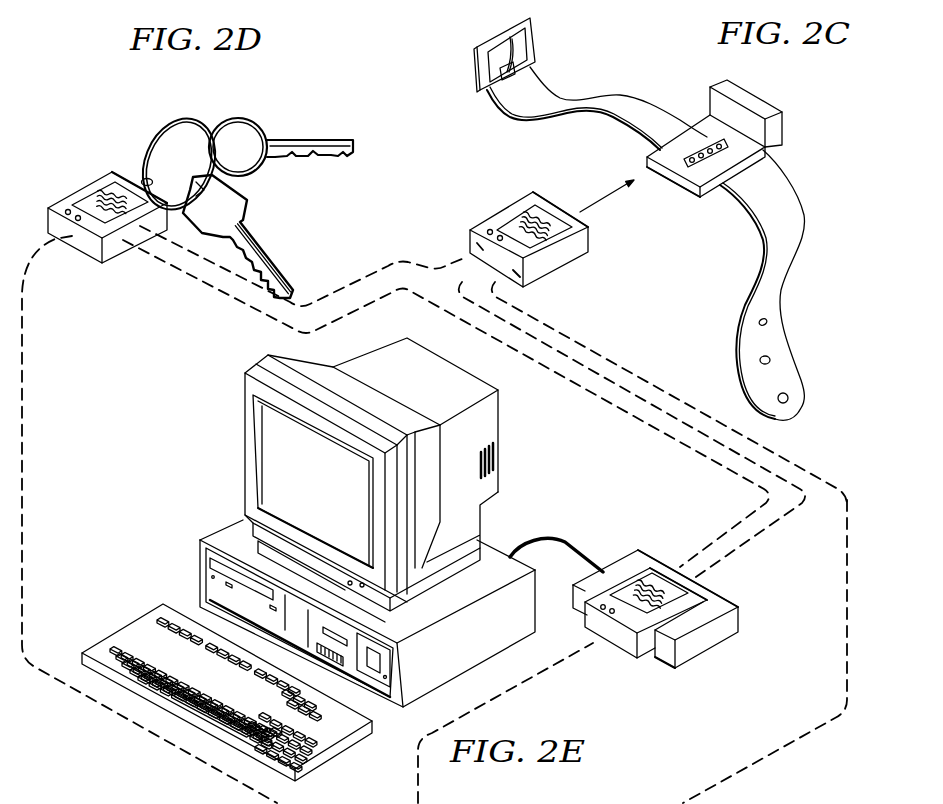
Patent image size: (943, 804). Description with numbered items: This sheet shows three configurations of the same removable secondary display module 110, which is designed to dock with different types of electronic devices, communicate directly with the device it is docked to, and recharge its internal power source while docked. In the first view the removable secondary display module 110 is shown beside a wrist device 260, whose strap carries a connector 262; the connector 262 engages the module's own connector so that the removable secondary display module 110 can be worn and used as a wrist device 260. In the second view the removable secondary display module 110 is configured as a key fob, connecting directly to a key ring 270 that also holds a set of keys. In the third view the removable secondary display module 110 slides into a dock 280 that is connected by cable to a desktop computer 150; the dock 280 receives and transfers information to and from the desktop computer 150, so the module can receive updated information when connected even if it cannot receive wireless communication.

In FIG. 2D, the removable secondary display module 110 is at (81, 186).
In FIG. 2C, the removable secondary display module 110 is at (486, 214).
In FIG. 2E, the removable secondary display module 110 is at (617, 650).
In FIG. 2E, the desktop computer 150 is at (245, 447).
In FIG. 2C, the wrist device 260 is at (801, 215).
In FIG. 2C, the connector 262 is at (712, 140).
In FIG. 2D, the key ring 270 is at (173, 125).
In FIG. 2E, the dock 280 is at (702, 659).